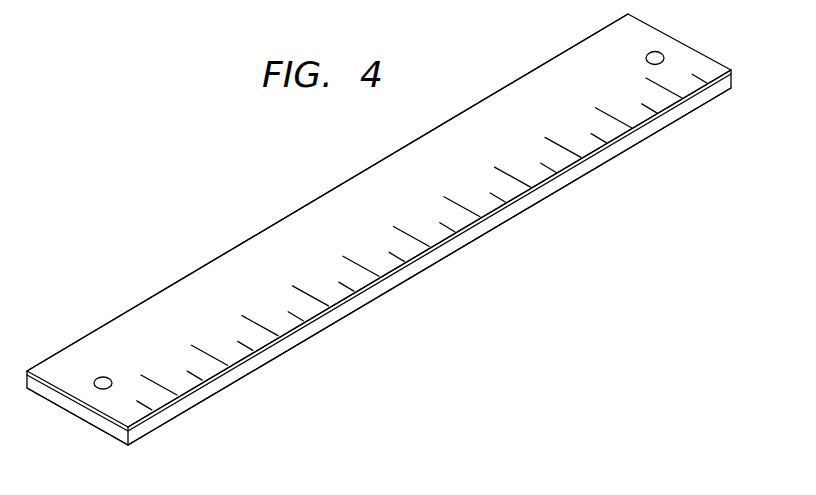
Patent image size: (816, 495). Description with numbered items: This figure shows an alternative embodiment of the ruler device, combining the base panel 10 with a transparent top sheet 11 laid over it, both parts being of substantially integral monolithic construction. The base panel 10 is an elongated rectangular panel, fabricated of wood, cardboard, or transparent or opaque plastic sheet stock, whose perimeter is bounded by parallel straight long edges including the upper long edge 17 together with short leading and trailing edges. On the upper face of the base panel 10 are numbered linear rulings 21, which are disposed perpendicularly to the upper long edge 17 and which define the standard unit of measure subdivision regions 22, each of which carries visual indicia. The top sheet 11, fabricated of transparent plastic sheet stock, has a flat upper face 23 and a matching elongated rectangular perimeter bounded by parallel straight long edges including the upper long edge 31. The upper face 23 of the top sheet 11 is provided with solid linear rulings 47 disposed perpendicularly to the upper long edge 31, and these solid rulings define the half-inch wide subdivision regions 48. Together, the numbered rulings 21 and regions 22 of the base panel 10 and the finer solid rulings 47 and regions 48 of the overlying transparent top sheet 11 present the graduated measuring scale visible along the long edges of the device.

The base panel 10 is at (379, 229).
The top sheet 11 is at (573, 167).
The upper long edge 17 is at (495, 215).
The numbered linear rulings 21 is at (303, 290).
The standard unit of measure subdivision regions 22 is at (216, 332).
The upper face of top sheet 23 is at (211, 275).
The upper long edge of top sheet 31 is at (357, 297).
The solid linear rulings 47 is at (349, 288).
The ½" wide subdivision regions 48 is at (370, 284).